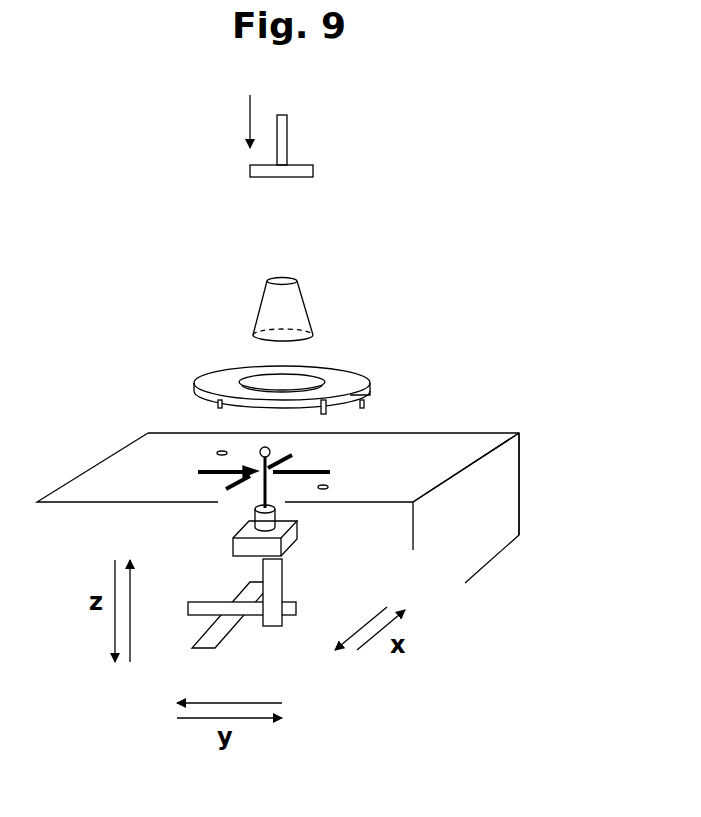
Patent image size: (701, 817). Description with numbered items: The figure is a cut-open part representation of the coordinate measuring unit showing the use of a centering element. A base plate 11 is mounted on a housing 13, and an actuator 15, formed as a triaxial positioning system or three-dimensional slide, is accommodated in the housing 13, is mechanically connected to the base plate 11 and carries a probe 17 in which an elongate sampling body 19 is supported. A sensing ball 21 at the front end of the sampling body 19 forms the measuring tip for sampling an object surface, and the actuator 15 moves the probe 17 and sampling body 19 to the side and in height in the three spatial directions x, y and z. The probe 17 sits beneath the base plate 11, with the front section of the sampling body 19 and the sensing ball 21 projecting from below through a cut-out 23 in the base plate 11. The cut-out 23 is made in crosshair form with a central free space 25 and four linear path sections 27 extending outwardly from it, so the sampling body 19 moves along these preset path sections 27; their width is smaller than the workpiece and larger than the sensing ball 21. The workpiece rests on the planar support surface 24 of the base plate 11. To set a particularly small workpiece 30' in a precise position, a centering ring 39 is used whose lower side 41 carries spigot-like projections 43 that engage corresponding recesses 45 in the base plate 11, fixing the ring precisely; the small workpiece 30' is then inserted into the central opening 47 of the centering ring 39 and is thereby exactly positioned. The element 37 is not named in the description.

The base plate 11 is at (457, 448).
The housing 13 is at (500, 470).
The actuator 15 is at (290, 632).
The probe 17 is at (295, 535).
The sampling body 19 is at (258, 482).
The sensing ball 21 is at (272, 450).
The cut-out 23 is at (205, 472).
The support surface 24 is at (435, 467).
The central free space 25 is at (285, 478).
The path sections 27 is at (207, 475).
The small workpiece 30' is at (319, 297).
The stamp 37 is at (283, 135).
The centering ring 39 is at (207, 378).
The lower side 41 is at (362, 407).
The spigot-like projections 43 is at (218, 404).
The recesses 45 is at (327, 487).
The central opening 47 is at (262, 385).